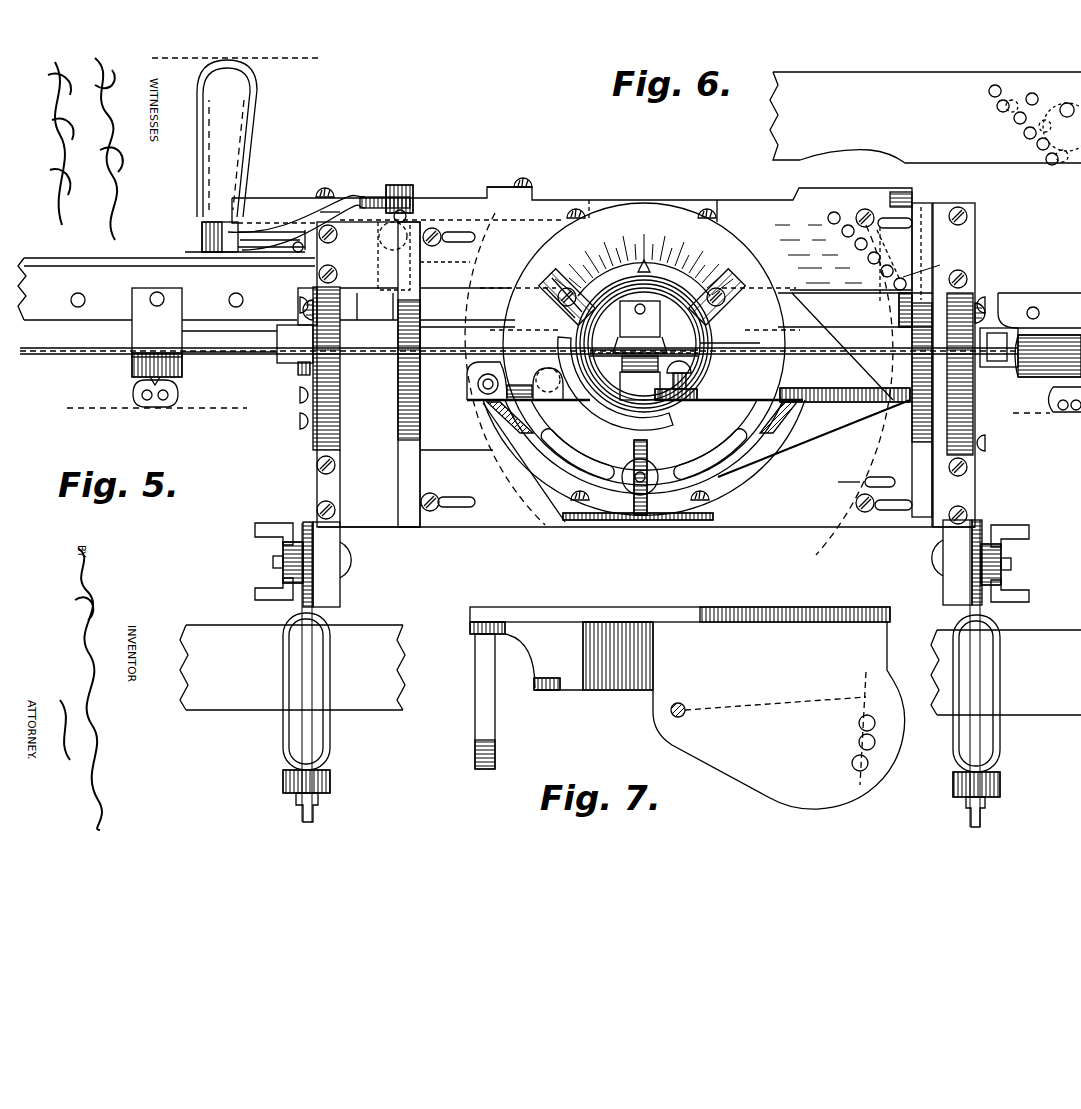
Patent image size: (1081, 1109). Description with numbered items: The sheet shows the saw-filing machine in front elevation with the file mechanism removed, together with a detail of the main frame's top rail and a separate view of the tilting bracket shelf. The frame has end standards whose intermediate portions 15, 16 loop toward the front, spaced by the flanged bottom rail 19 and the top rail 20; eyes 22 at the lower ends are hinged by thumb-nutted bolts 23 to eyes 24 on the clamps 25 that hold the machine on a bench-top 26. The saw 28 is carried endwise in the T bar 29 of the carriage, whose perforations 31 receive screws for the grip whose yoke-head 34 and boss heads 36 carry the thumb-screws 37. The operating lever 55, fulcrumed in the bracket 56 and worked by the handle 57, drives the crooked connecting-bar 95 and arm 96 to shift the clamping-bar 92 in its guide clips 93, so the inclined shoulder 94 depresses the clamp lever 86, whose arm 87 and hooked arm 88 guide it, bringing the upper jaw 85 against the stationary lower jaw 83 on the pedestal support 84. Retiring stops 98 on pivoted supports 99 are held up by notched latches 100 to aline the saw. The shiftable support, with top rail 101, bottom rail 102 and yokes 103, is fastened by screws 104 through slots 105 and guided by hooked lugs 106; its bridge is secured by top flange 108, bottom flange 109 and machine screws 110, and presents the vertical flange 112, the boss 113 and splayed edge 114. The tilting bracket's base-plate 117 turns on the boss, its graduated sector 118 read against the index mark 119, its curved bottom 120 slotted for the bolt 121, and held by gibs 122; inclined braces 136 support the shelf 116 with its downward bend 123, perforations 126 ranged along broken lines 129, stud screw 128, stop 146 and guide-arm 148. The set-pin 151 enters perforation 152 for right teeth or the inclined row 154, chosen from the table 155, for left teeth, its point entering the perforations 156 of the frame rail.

In FIG. 5, the intermediate portion 15 is at (970, 470).
In FIG. 5, the intermediate portion 16 is at (312, 447).
In FIG. 5, the flanged bottom rail 19 is at (983, 488).
In FIG. 5, the top rail 20 is at (998, 238).
In FIG. 6, the top rail 20 is at (925, 117).
In FIG. 5, the eye 22 is at (335, 575).
In FIG. 5, the thumb-nutted bolt 23 is at (273, 562).
In FIG. 5, the eye 24 is at (300, 570).
In FIG. 5, the clamp 25 is at (293, 722).
In FIG. 5, the bench-top 26 is at (630, 670).
In FIG. 5, the saw 28 is at (55, 355).
In FIG. 5, the T bar 29 is at (166, 289).
In FIG. 5, the countersunk perforations 31 is at (230, 296).
In FIG. 5, the yoke-head 34 is at (228, 340).
In FIG. 5, the boss head 36 is at (132, 368).
In FIG. 5, the thumb-screw 37 is at (135, 397).
In FIG. 5, the operating lever 55 is at (202, 242).
In FIG. 5, the bracket 56 is at (308, 235).
In FIG. 5, the handle 57 is at (227, 138).
In FIG. 5, the stationary lower jaw 83 is at (644, 344).
In FIG. 5, the pedestal support 84 is at (644, 375).
In FIG. 5, the upper jaw 85 is at (640, 327).
In FIG. 5, the clamp lever 86 is at (719, 257).
In FIG. 5, the arm 87 is at (902, 327).
In FIG. 5, the hooked arm 88 is at (374, 306).
In FIG. 5, the clamping-bar 92 is at (278, 197).
In FIG. 5, the guide clip 93 is at (330, 190).
In FIG. 5, the inclined shoulder 94 is at (360, 220).
In FIG. 5, the crooked connecting-bar 95 is at (372, 198).
In FIG. 5, the arm 96 is at (400, 185).
In FIG. 5, the retiring stop 98 is at (290, 332).
In FIG. 5, the support 99 is at (300, 420).
In FIG. 5, the notched latch 100 is at (318, 300).
In FIG. 5, the top rail 101 is at (445, 266).
In FIG. 5, the bottom rail 102 is at (646, 488).
In FIG. 5, the vertical yoke 103 is at (998, 508).
In FIG. 5, the screw 104 is at (432, 228).
In FIG. 5, the longitudinal slot 105 is at (460, 230).
In FIG. 5, the hooked lug 106 is at (498, 187).
In FIG. 5, the top flange 108 is at (690, 205).
In FIG. 5, the bottom flange 109 is at (603, 505).
In FIG. 5, the machine screw 110 is at (576, 208).
In FIG. 5, the bottom curved edged vertical flange 112 is at (565, 455).
In FIG. 5, the boss 113 is at (578, 320).
In FIG. 5, the splayed edge 114 is at (745, 341).
In FIG. 5, the shelf 116 is at (880, 405).
In FIG. 7, the shelf 116 is at (779, 715).
In FIG. 5, the base-plate 117 is at (688, 347).
In FIG. 7, the base-plate 117 is at (770, 600).
In FIG. 5, the graduated sector 118 is at (636, 232).
In FIG. 5, the index mark 119 is at (624, 268).
In FIG. 5, the curved bottom 120 is at (560, 478).
In FIG. 5, the bolt 121 is at (640, 515).
In FIG. 5, the gib 122 is at (548, 297).
In FIG. 5, the downward bend 123 is at (656, 418).
In FIG. 7, the downward bend 123 is at (620, 660).
In FIG. 7, the perforations 126 is at (853, 760).
In FIG. 5, the stud screw 128 is at (692, 372).
In FIG. 7, the stud screw 128 is at (690, 696).
In FIG. 7, the broken lines 129 is at (865, 695).
In FIG. 5, the inclined brace 136 is at (500, 418).
In FIG. 5, the stop 146 is at (545, 372).
In FIG. 7, the stop 146 is at (545, 692).
In FIG. 5, the guide-arm 148 is at (478, 384).
In FIG. 7, the guide-arm 148 is at (480, 716).
In FIG. 5, the set-pin 151 is at (870, 487).
In FIG. 5, the perforation 152 is at (878, 480).
In FIG. 5, the inclined row of perforations 154 is at (938, 260).
In FIG. 5, the table 155 is at (765, 218).
In FIG. 6, the perforations 156 is at (1050, 155).